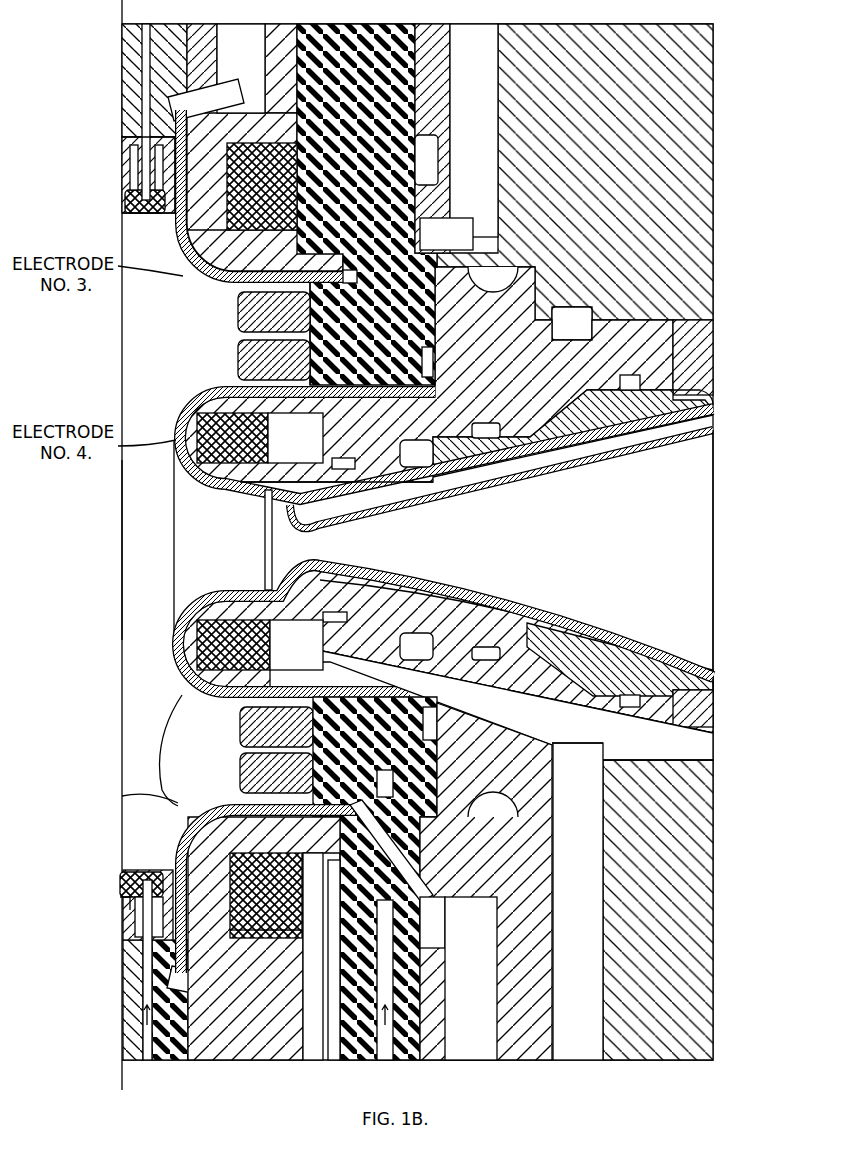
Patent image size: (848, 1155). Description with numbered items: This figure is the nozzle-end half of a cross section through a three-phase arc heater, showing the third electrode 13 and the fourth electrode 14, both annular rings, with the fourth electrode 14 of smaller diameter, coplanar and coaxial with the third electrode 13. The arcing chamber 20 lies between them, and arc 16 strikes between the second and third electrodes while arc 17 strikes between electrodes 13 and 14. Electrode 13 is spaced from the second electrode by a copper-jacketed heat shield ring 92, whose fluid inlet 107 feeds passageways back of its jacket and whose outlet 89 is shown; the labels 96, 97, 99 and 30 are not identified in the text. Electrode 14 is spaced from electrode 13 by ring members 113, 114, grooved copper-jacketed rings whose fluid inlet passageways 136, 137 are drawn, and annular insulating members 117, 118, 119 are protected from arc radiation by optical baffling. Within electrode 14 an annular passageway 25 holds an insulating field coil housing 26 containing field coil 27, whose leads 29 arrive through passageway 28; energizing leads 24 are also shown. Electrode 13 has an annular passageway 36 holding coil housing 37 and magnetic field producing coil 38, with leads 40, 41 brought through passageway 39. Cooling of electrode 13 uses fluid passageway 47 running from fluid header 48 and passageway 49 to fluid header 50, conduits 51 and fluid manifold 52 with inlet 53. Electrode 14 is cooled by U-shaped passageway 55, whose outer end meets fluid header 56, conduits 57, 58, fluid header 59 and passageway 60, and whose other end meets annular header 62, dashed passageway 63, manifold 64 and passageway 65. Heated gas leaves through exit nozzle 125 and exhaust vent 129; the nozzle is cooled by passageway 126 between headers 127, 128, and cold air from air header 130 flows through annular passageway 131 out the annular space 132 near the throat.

The third electrode 13 is at (178, 818).
The fourth electrode 14 is at (177, 652).
The arc 16 is at (166, 798).
The arc 17 is at (163, 745).
The arcing chamber 20 is at (157, 556).
The energizing leads 24 is at (310, 430).
The annular passageway 25 is at (244, 492).
The field coil housing 26 is at (213, 466).
The field coil 27 is at (196, 641).
The passageway 28 is at (648, 752).
The leads 29 is at (714, 753).
The passage upper wall 30 is at (714, 736).
The annular passageway 36 is at (241, 940).
The coil housing 37 is at (236, 912).
The magnetic field producing coil 38 is at (261, 940).
The passageway 39 is at (303, 1050).
The lead 40 is at (313, 1060).
The lead 41 is at (341, 1055).
The fluid passageway 47 is at (182, 276).
The fluid header 48 is at (231, 92).
The fluid passageway 49 is at (248, 40).
The fluid header 50 is at (351, 268).
The conduits 51 is at (375, 842).
The fluid manifold 52 is at (438, 920).
The fluid inlet 53 is at (476, 1050).
The passageway 55 is at (196, 400).
The fluid header 56 is at (420, 360).
The conduit 57 is at (383, 305).
The conduit 58 is at (411, 737).
The fluid header 59 is at (440, 228).
The passageway 60 is at (483, 32).
The fluid header 62 is at (344, 457).
The passageway 63 is at (500, 745).
The fluid manifold 64 is at (569, 772).
The passageway 65 is at (576, 1060).
The fluid outlet 89 is at (146, 28).
The heat shield ring 92 is at (161, 235).
The housing inner 96 is at (165, 906).
The housing 97 is at (170, 872).
The lip 99 is at (124, 906).
The fluid inlet 107 is at (148, 1060).
The ring member 113 is at (241, 359).
The ring member 114 is at (241, 313).
The annular electrical insulating member 117 is at (303, 286).
The annular electrical insulating member 118 is at (308, 326).
The annular electrical insulating member 119 is at (308, 368).
The exit nozzle 125 is at (758, 441).
The passageway 126 is at (497, 470).
The fluid header 127 is at (489, 425).
The fluid header 128 is at (640, 696).
The exhaust vent 129 is at (714, 542).
The air header 130 is at (421, 441).
The annular passageway 131 is at (382, 506).
The annular space 132 is at (264, 514).
The fluid inlet passageway 136 is at (377, 772).
The fluid inlet passageway 137 is at (381, 958).